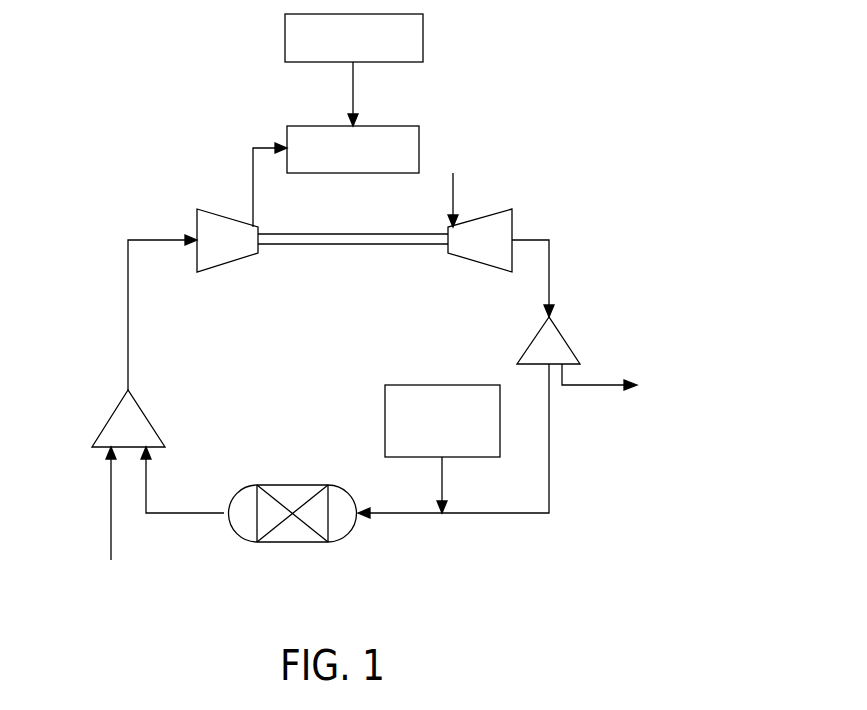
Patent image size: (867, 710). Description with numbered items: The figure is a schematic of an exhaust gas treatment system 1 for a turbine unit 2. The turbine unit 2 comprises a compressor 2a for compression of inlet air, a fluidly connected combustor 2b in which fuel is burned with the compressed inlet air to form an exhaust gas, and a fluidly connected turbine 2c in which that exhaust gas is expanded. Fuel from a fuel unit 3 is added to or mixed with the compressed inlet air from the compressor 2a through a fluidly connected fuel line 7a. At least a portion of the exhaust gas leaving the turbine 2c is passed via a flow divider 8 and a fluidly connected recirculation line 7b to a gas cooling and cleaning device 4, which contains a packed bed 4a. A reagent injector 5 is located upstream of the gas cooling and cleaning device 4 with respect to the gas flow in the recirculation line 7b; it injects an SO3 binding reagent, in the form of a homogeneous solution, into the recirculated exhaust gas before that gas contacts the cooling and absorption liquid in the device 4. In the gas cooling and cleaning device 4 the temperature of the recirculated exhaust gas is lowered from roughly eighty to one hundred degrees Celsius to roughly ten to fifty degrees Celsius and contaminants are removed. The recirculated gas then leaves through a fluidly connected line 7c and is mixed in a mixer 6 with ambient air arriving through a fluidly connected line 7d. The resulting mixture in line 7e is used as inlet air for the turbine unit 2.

The exhaust gas treatment system 1 is at (652, 111).
The turbine unit 2 is at (512, 303).
The compressor 2a is at (220, 235).
The combustor 2b is at (419, 133).
The turbine 2c is at (488, 235).
The fuel unit 3 is at (423, 38).
The gas cooling and cleaning device 4 is at (343, 485).
The packed bed 4a is at (290, 542).
The reagent injector 5 is at (441, 385).
The mixer 6 is at (123, 424).
The fuel line 7a is at (353, 90).
The recirculation line 7b is at (549, 436).
The line 7c is at (183, 513).
The line 7d is at (111, 511).
The line 7e is at (128, 314).
The flow divider 8 is at (560, 347).